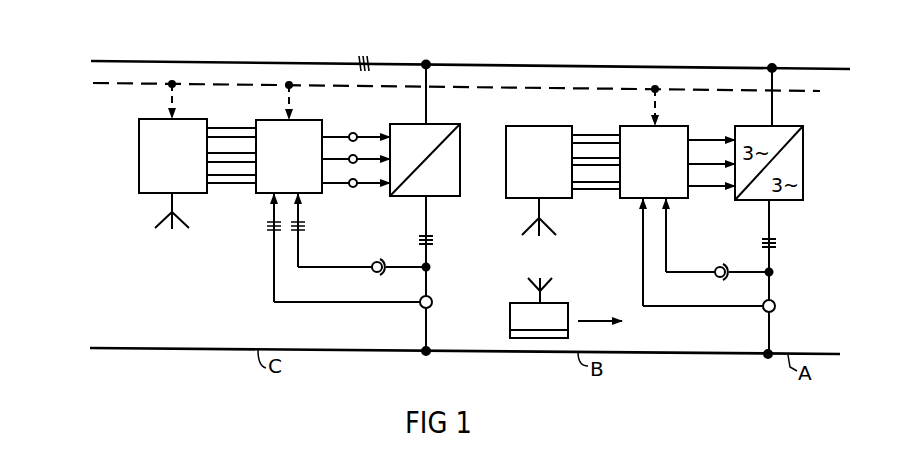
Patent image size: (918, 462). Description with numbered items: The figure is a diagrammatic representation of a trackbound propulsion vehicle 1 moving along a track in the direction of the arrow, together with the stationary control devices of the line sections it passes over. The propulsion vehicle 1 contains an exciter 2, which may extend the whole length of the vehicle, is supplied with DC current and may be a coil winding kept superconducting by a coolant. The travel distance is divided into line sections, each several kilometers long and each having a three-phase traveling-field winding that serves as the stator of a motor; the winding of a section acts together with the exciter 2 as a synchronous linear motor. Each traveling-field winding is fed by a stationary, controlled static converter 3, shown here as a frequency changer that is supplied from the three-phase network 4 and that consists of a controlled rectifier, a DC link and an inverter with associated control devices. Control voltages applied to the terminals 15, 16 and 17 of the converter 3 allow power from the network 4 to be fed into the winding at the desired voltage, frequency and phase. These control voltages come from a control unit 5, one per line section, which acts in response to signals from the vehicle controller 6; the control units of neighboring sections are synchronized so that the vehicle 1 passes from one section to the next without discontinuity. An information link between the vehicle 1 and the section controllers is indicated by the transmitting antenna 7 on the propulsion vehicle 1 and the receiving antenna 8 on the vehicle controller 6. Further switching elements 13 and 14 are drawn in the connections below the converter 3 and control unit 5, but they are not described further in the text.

The propulsion vehicle 1 is at (549, 308).
The exciter 2 is at (510, 330).
The converter 3 is at (460, 126).
The three-phase network 4 is at (476, 62).
The control unit 5 is at (265, 120).
The vehicle controller 6 is at (139, 169).
The transmitting antenna 7 is at (548, 282).
The receiving antenna 8 is at (168, 227).
The switch 13 is at (432, 300).
The switch 14 is at (373, 262).
The terminal 15 is at (351, 131).
The terminal 16 is at (358, 155).
The terminal 17 is at (352, 188).